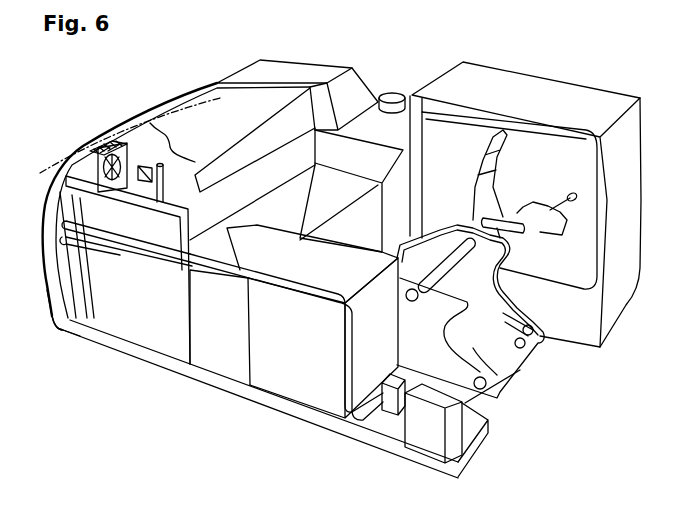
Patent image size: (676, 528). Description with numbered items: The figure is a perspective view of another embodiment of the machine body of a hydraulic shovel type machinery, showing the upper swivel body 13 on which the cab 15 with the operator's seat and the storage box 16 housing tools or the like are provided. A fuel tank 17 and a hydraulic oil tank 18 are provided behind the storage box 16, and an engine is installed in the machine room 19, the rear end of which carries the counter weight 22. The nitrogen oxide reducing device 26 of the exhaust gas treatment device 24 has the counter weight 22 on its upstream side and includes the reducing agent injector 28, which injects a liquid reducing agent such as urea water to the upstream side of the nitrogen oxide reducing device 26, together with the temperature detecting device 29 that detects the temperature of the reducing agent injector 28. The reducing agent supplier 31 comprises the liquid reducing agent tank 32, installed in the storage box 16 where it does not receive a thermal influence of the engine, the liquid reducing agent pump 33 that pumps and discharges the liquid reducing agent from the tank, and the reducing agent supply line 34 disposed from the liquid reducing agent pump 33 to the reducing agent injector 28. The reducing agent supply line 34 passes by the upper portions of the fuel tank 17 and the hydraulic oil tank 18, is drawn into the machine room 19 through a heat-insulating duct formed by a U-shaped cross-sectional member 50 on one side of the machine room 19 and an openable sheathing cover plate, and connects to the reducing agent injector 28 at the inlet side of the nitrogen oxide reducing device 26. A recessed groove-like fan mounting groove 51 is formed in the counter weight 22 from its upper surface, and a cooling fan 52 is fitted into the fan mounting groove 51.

The upper swivel body 13 is at (513, 373).
The cab 15 is at (532, 86).
The storage box 16 is at (475, 424).
The fuel tank 17 is at (292, 389).
The hydraulic oil tank 18 is at (230, 365).
The machine room 19 is at (135, 147).
The counter weight 22 is at (100, 133).
The exhaust gas treatment device 24 is at (75, 258).
The nitrogen oxide reducing device 26 is at (63, 238).
The reducing agent injector 28 is at (148, 168).
The temperature detecting device 29 is at (162, 163).
The reducing agent supplier 31 is at (67, 208).
The liquid reducing agent tank 32 is at (432, 447).
The liquid reducing agent pump 33 is at (390, 414).
The reducing agent supply line 34 is at (357, 415).
The U-shaped cross-sectional member 50 is at (53, 310).
The fan mounting groove 51 is at (72, 176).
The cooling fan 52 is at (88, 152).